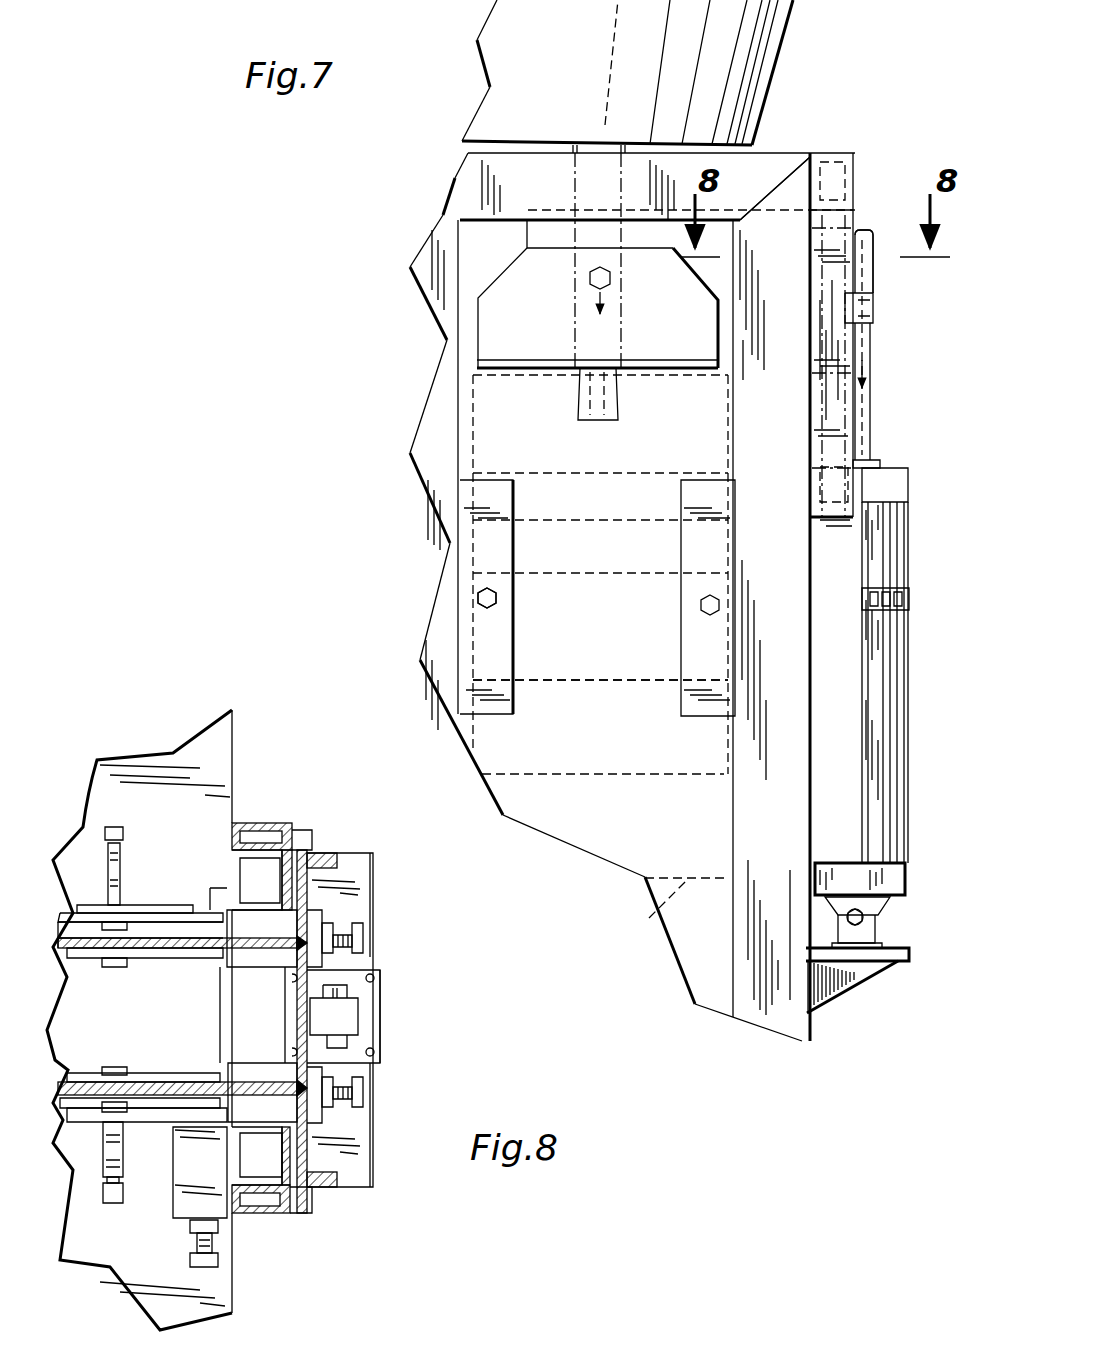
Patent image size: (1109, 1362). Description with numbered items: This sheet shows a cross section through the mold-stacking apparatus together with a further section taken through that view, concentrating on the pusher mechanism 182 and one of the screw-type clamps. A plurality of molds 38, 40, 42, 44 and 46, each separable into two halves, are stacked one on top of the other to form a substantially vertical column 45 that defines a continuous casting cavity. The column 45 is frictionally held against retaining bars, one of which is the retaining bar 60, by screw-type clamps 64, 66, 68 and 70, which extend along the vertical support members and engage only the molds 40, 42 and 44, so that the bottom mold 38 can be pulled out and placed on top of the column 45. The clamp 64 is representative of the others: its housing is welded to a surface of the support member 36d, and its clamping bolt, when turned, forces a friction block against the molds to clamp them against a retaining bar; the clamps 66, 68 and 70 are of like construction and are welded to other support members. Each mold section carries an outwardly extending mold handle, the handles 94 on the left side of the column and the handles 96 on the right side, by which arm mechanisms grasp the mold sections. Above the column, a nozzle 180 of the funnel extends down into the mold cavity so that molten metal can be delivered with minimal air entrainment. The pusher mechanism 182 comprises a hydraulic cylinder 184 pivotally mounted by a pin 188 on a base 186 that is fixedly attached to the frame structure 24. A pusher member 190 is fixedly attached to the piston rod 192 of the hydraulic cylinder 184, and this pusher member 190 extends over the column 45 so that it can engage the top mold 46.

In FIG. 7, the frame structure 24 is at (768, 1012).
In FIG. 8, the support member 36d is at (264, 860).
In FIG. 7, the mold 38 is at (668, 906).
In FIG. 8, the mold 38 is at (139, 1020).
In FIG. 7, the mold 40 is at (473, 733).
In FIG. 7, the mold 42 is at (485, 622).
In FIG. 7, the mold 44 is at (472, 495).
In FIG. 7, the column 45 is at (560, 520).
In FIG. 8, the column 45 is at (158, 905).
In FIG. 7, the mold 46 is at (473, 402).
In FIG. 8, the retaining bar 60 is at (212, 888).
In FIG. 8, the screw-type clamp 64 is at (333, 912).
In FIG. 8, the screw-type clamp 66 is at (333, 1117).
In FIG. 7, the screw-type clamp 68 is at (685, 718).
In FIG. 8, the screw-type clamp 68 is at (178, 1222).
In FIG. 7, the screw-type clamp 70 is at (515, 718).
In FIG. 8, the mold handle 94 is at (125, 865).
In FIG. 8, the mold handle 96 is at (118, 1157).
In FIG. 7, the nozzle 180 is at (768, 60).
In FIG. 7, the pusher mechanism 182 is at (872, 418).
In FIG. 8, the pusher mechanism 182 is at (382, 1027).
In FIG. 7, the hydraulic cylinder 184 is at (885, 740).
In FIG. 7, the base 186 is at (850, 985).
In FIG. 8, the base 186 is at (370, 1040).
In FIG. 7, the pin 188 is at (868, 921).
In FIG. 7, the pusher member 190 is at (790, 254).
In FIG. 8, the pusher member 190 is at (313, 977).
In FIG. 7, the piston rod 192 is at (868, 335).
In FIG. 8, the piston rod 192 is at (355, 1015).